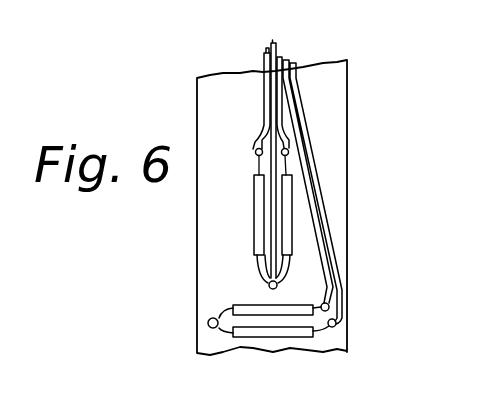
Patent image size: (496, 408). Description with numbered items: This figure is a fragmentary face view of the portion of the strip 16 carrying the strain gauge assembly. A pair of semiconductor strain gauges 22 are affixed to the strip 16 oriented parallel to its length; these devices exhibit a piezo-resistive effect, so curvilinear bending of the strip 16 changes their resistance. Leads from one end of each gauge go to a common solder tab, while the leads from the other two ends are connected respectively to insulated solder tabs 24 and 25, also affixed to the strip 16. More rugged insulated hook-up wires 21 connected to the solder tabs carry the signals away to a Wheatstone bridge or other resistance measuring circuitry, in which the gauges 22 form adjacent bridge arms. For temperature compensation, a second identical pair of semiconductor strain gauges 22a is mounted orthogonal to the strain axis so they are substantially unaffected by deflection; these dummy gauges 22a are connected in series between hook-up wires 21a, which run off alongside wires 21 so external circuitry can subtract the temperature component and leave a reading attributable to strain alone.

The strip 16 is at (338, 215).
The insulated hook-up wires 21 is at (275, 83).
The hook-up wires 21a is at (330, 262).
The semiconductor strain gauges 22 is at (291, 218).
The compensating semiconductor strain gauges 22a is at (237, 337).
The insulated solder tab 24 is at (255, 149).
The insulated solder tab 25 is at (289, 151).